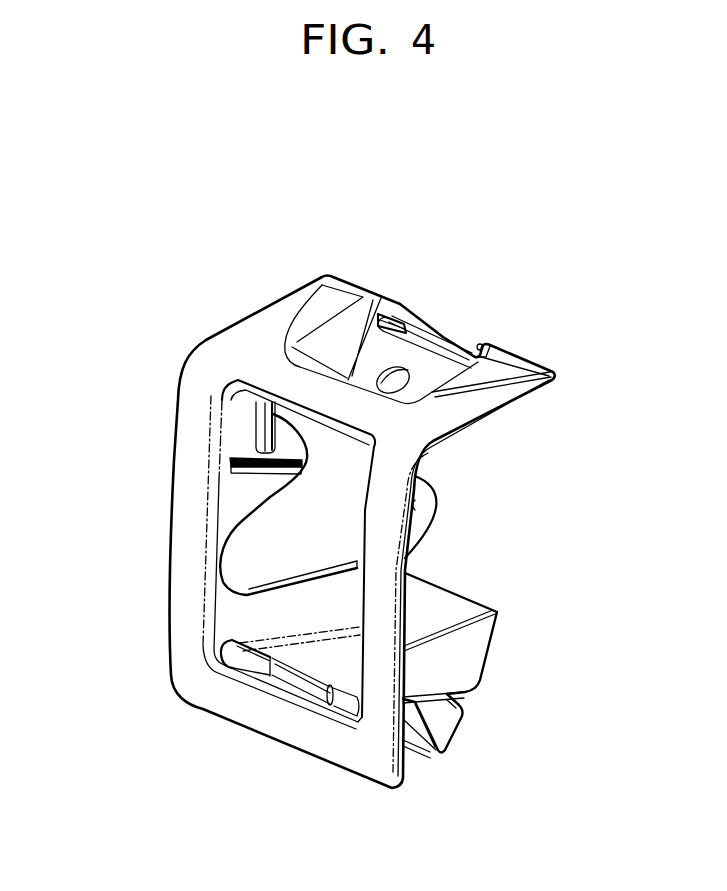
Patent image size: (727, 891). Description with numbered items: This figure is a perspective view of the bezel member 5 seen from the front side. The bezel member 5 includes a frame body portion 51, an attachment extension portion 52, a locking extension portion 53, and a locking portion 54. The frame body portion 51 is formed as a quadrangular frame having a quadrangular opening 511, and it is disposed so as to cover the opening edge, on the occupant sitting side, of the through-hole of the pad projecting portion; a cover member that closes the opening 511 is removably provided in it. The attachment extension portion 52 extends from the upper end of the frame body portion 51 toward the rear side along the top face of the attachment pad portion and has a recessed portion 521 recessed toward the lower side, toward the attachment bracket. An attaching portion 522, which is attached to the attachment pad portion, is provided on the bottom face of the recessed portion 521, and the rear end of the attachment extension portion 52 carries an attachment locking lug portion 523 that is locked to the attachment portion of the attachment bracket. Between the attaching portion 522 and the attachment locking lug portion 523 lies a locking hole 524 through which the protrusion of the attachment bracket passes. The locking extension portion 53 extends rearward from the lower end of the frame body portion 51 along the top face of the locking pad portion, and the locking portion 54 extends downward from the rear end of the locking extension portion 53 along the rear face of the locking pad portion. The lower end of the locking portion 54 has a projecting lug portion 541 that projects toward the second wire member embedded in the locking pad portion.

The bezel member 5 is at (127, 267).
The frame body portion 51 is at (190, 475).
The opening 511 is at (265, 556).
The attachment extension portion 52 is at (292, 312).
The recessed portion 521 is at (382, 308).
The attaching portion 522 is at (433, 322).
The attachment locking lug portion 523 is at (468, 325).
The locking hole 524 is at (400, 318).
The locking extension portion 53 is at (462, 660).
The locking portion 54 is at (445, 728).
The projecting lug portion 541 is at (422, 735).